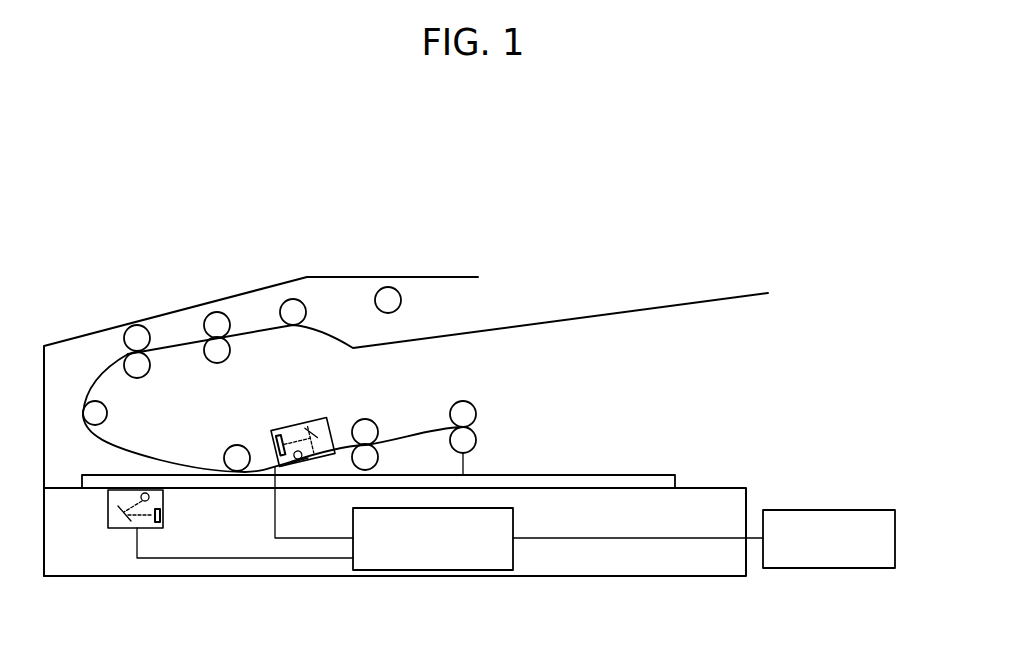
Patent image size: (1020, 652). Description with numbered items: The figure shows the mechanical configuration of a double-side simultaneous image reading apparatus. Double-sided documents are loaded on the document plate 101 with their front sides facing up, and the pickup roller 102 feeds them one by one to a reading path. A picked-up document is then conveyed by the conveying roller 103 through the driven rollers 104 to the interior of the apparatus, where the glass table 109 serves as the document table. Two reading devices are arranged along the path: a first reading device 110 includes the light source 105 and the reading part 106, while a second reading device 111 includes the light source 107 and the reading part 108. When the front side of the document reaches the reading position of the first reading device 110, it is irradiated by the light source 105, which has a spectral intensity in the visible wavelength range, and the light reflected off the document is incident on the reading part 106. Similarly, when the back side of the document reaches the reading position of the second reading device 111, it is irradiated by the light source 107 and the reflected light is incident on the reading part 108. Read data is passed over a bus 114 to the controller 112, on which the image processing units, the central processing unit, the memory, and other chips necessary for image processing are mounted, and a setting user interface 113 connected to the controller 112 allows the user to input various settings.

The document plate 101 is at (643, 308).
The pickup roller 102 is at (388, 287).
The conveying roller 103 is at (290, 299).
The driven rollers 104 is at (108, 410).
The light source 105 is at (145, 492).
The reading part 106 is at (163, 516).
The light source 107 is at (296, 474).
The reading part 108 is at (272, 430).
The glass table 109 is at (578, 475).
The first reading device 110 is at (117, 529).
The second reading device 111 is at (327, 418).
The controller 112 is at (514, 521).
The setting user interface 113 is at (826, 508).
The bus 114 is at (614, 538).